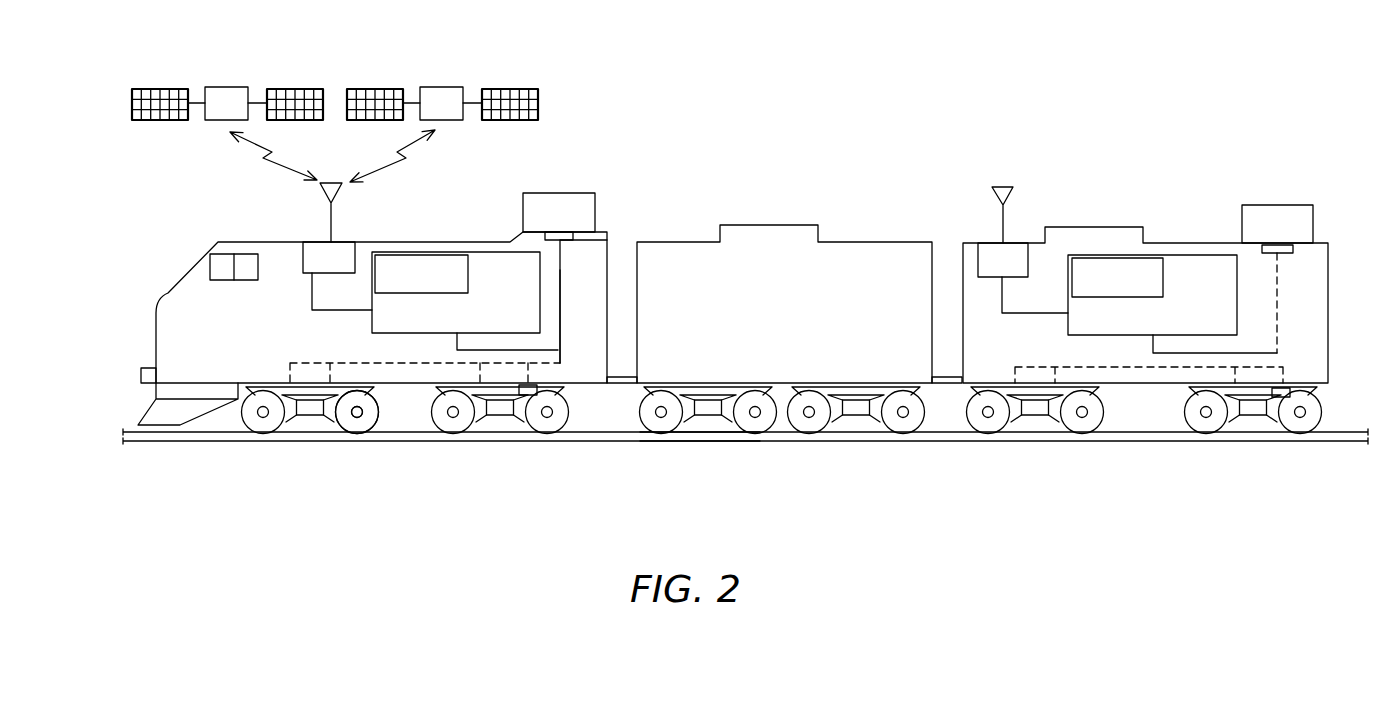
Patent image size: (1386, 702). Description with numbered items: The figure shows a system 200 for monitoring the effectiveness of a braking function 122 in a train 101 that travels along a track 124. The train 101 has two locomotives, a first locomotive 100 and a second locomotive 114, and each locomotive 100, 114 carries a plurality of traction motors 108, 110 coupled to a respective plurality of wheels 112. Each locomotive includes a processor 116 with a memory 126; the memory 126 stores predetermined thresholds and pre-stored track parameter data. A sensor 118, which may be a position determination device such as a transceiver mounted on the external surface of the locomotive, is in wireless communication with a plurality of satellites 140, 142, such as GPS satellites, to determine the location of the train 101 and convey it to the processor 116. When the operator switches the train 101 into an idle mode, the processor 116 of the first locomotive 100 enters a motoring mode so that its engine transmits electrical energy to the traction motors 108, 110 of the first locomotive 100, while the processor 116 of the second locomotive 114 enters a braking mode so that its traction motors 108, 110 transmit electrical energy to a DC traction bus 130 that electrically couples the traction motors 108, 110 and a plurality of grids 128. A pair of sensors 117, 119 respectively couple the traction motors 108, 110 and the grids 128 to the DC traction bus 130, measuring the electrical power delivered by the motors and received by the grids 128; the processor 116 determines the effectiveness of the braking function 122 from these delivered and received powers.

The front locomotive 100 is at (342, 240).
The train 101 is at (796, 199).
The traction motor 108 is at (318, 462).
The traction motor 110 is at (517, 420).
The wheel 112 is at (357, 412).
The second locomotive 114 is at (1057, 227).
The processor 116 is at (485, 260).
The sensor 117 is at (573, 238).
The sensor 118 is at (328, 217).
The sensor 119 is at (537, 395).
The braking function 122 is at (1175, 452).
The track 124 is at (697, 442).
The memory 126 is at (412, 260).
The grid 128 is at (573, 193).
The DC traction bus 130 is at (560, 292).
The satellite 140 is at (229, 86).
The satellite 142 is at (443, 85).
The system 200 is at (766, 113).